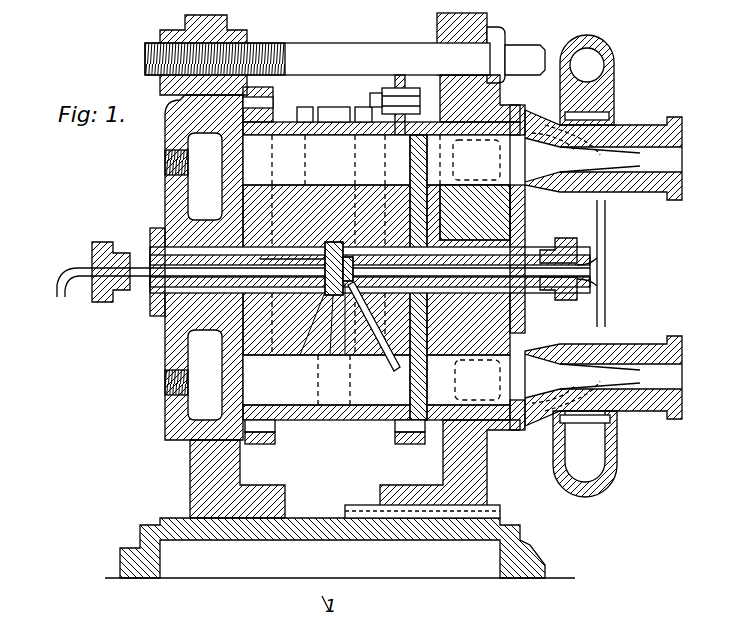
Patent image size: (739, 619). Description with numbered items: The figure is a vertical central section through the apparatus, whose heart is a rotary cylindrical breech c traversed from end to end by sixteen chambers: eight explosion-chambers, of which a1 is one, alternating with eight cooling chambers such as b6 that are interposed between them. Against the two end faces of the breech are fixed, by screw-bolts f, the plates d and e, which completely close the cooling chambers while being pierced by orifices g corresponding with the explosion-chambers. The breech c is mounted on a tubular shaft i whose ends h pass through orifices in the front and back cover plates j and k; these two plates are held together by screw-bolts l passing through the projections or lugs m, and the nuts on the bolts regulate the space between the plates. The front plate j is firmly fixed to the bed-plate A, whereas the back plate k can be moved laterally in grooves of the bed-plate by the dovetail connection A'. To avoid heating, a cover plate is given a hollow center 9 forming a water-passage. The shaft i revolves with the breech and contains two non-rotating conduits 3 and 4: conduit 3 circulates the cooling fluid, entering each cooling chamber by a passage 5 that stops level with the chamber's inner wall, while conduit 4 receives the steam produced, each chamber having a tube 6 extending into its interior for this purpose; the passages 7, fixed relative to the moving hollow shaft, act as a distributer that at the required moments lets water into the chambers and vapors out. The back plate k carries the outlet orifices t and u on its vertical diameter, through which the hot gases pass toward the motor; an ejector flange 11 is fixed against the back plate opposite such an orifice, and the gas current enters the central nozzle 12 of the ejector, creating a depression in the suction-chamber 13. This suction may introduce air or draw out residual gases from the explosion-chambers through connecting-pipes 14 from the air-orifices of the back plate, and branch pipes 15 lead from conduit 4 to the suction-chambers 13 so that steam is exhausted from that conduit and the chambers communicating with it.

The projections or lugs m is at (236, 24).
The screw-bolts l is at (317, 45).
The screw-bolts f is at (398, 95).
The front cover plate j is at (204, 267).
The hollow center 9 is at (193, 375).
The cylindrical breech c is at (376, 270).
The back cover plate k is at (475, 212).
The orifices g is at (331, 270).
The explosion-chamber a1 is at (316, 160).
The outlet orifice t is at (470, 160).
The outlet orifice u is at (477, 380).
The end plate d is at (258, 444).
The end plate e is at (415, 444).
The bed-plate A is at (340, 548).
The dovetail connection A' is at (436, 500).
The shaft ends h is at (160, 318).
The tubular shaft i is at (333, 252).
The conduit 4 is at (362, 275).
The conduit 3 is at (280, 275).
The passage 5 is at (303, 350).
The conduits or passages 7 is at (331, 356).
The tube 6 is at (350, 355).
The cooling chamber b6 is at (374, 339).
The flange 11 is at (512, 118).
The suction-chamber 13 is at (612, 188).
The central tube or nozzle 12 is at (512, 160).
The connecting-pipes 14 is at (585, 72).
The branch pipes 15 is at (597, 255).